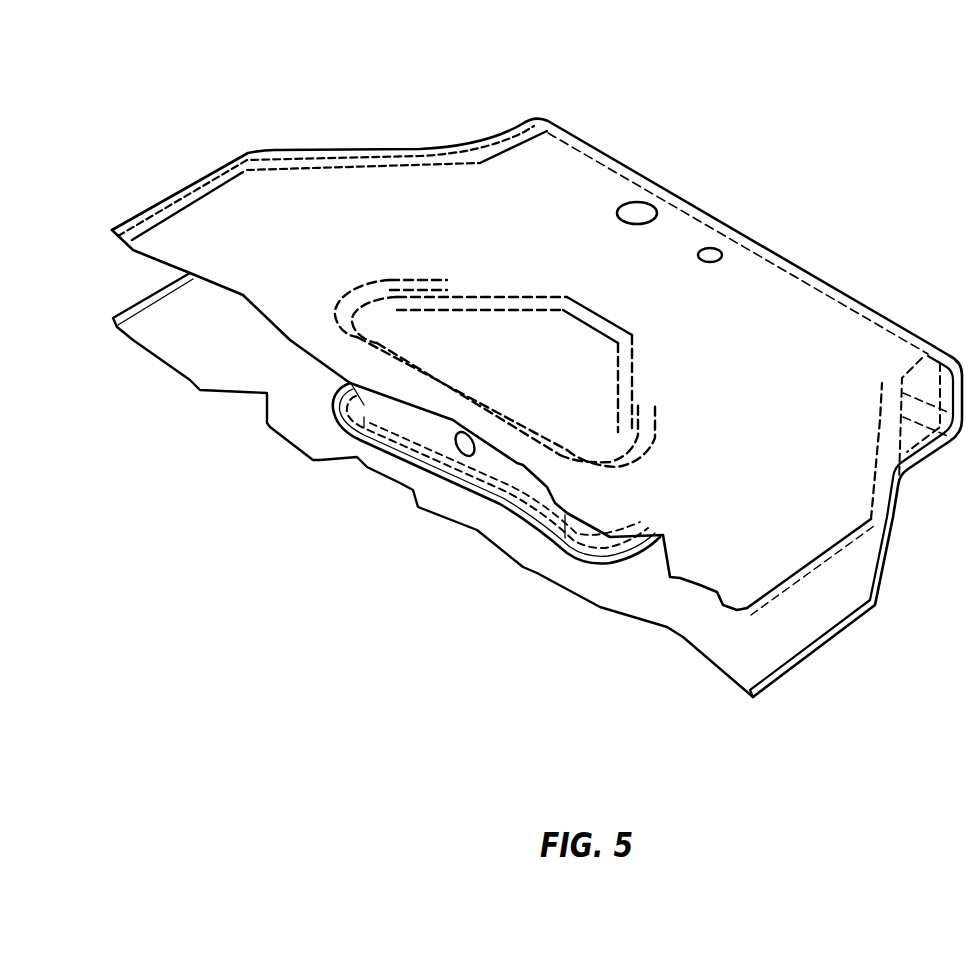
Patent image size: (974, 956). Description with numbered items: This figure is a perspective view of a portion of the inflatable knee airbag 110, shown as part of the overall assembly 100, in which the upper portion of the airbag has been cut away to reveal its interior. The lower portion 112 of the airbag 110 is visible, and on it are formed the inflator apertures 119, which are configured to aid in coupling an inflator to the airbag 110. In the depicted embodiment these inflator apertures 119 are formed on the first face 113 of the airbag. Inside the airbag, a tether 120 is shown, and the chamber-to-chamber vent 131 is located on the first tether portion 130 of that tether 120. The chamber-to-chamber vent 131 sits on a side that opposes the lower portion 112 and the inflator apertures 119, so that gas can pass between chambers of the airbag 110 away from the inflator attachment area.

The bracket assembly 100 is at (866, 83).
The inflatable knee airbag 110 is at (575, 164).
The lower portion 112 is at (788, 297).
The first face 113 is at (311, 252).
The inflator apertures 119 is at (640, 205).
The tether 120 is at (383, 263).
The first tether portion 130 is at (375, 407).
The chamber-to-chamber vent 131 is at (457, 452).